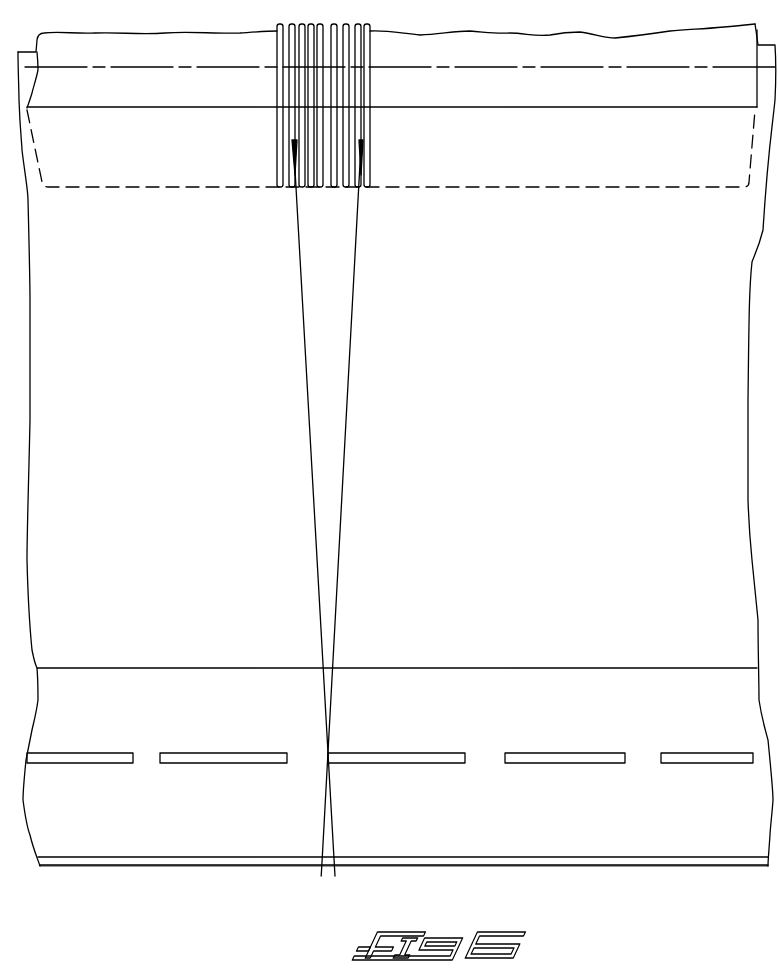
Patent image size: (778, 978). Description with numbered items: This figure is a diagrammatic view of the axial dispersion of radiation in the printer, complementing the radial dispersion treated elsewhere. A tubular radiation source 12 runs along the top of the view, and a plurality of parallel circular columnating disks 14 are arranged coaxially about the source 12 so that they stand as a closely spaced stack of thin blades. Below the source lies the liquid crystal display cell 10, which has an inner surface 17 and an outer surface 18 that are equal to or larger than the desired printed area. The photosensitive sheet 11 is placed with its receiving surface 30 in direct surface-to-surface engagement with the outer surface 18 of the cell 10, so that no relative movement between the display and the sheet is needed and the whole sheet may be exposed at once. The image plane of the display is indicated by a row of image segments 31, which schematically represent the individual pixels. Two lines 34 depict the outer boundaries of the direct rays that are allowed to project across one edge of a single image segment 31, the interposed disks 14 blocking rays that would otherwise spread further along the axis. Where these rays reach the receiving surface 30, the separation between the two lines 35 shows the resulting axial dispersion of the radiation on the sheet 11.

The liquid crystal display cell 10 is at (582, 698).
The photosensitive sheet 11 is at (600, 862).
The tubular radiation source 12 is at (173, 93).
The columnating disks 14 is at (277, 165).
The inner surface 17 is at (523, 668).
The outer surface 18 is at (660, 857).
The receiving surface 30 is at (552, 857).
The image segments 31 is at (405, 764).
The lines depicting outer boundaries of direct rays 34 is at (303, 366).
The lines showing dispersion 35 is at (323, 880).